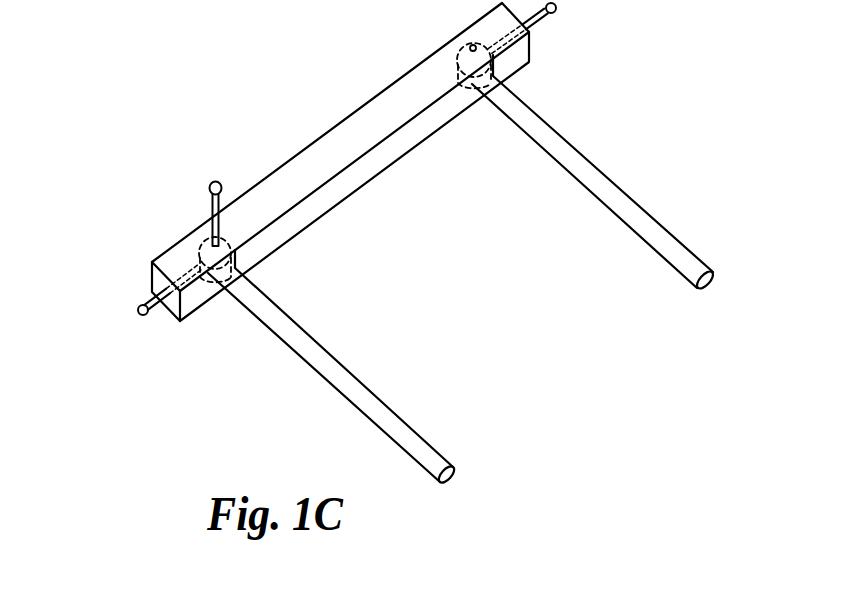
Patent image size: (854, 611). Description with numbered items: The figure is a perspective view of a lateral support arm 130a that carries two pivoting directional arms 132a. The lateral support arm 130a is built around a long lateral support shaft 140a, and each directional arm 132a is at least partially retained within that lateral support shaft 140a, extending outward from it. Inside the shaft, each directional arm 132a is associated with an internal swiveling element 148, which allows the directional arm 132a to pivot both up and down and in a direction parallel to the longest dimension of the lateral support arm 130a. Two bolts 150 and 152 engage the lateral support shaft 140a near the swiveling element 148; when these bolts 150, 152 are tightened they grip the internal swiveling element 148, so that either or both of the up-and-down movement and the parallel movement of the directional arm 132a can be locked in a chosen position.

The lateral support arm 130a is at (186, 395).
The lateral support shaft 140a is at (312, 148).
The directional arm 132a is at (453, 458).
The internal swiveling element 148 is at (227, 286).
The bolt 150 is at (212, 205).
The bolt 152 is at (146, 303).